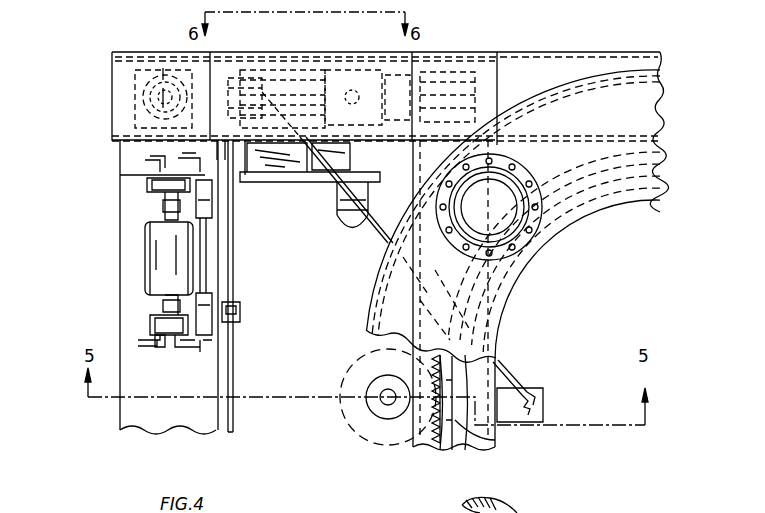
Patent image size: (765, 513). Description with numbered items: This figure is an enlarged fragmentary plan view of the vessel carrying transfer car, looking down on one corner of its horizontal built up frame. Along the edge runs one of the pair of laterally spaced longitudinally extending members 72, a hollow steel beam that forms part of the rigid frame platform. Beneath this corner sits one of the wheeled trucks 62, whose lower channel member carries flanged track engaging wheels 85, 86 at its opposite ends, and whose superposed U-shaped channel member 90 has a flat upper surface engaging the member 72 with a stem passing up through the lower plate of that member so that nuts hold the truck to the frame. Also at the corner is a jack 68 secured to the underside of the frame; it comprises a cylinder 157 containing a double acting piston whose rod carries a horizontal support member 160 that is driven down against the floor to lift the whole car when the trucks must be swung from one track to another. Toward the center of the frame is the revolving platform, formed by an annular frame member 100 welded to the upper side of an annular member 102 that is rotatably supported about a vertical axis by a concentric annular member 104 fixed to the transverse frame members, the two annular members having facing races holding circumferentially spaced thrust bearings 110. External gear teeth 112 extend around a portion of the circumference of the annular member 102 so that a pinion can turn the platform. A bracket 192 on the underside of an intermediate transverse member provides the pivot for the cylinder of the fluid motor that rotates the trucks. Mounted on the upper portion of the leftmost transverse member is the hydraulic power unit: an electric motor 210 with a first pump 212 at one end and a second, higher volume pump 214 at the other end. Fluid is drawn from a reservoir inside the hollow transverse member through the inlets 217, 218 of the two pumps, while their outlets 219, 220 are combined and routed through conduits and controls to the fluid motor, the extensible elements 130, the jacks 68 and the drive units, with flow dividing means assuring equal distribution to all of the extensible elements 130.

The wheeled truck 62 is at (268, 72).
The jack 68 is at (135, 95).
The longitudinally extending member 72 is at (497, 52).
The flanged track engaging wheel 85 is at (266, 75).
The flanged track engaging wheel 86 is at (406, 85).
The U-shaped channel member 90 is at (350, 88).
The annular frame member 100 is at (660, 100).
The annular member 102 is at (435, 460).
The annular member 104 is at (463, 368).
The thrust bearing 110 is at (467, 418).
The external gear teeth 112 is at (435, 432).
The extensible element 130 is at (530, 242).
The cylinder 157 is at (140, 78).
The horizontal support member 160 is at (163, 52).
The bracket 192 is at (543, 398).
The electric motor 210 is at (145, 265).
The first pump 212 is at (150, 325).
The second pump 214 is at (147, 183).
The inlet 217 is at (190, 350).
The inlet 218 is at (200, 160).
The outlet 219 is at (140, 343).
The outlet 220 is at (145, 165).